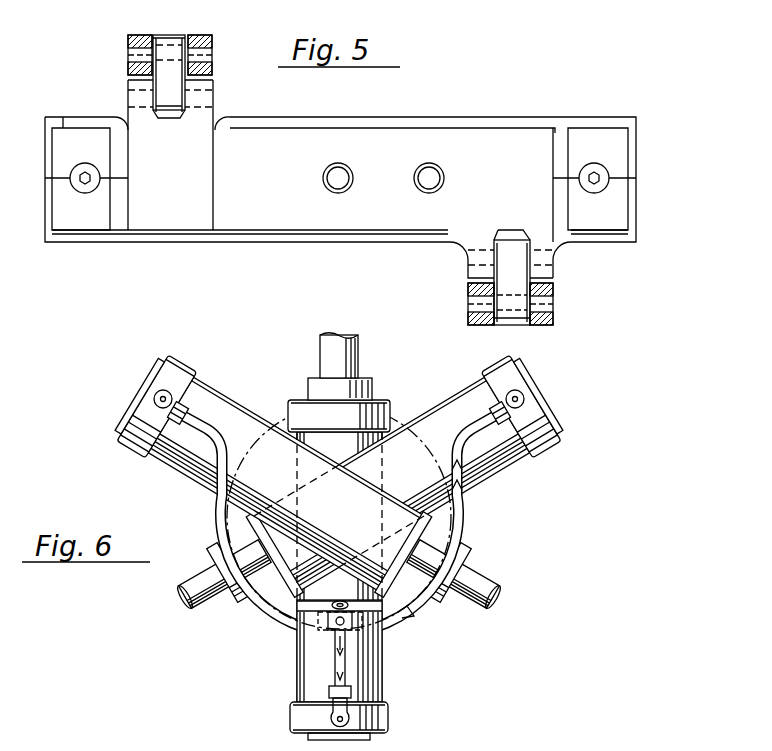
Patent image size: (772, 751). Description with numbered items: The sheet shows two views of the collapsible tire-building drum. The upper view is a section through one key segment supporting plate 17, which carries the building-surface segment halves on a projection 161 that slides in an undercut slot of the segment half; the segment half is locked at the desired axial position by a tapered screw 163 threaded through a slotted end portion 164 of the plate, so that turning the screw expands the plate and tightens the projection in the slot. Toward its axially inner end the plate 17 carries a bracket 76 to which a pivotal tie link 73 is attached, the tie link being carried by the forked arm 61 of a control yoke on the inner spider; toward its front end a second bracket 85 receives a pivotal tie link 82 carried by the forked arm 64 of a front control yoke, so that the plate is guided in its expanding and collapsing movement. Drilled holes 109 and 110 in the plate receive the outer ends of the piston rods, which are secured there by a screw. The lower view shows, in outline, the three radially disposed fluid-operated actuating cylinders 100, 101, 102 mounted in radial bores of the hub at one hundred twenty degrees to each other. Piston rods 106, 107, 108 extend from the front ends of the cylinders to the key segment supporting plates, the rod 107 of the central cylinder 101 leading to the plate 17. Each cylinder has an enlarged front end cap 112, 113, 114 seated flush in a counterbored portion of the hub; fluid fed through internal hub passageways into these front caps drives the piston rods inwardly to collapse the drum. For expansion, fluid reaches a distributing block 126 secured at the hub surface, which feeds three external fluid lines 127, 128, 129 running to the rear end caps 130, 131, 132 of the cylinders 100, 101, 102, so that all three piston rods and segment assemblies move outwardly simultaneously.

In FIG. 5, the key segment supporting plate 17 is at (265, 222).
In FIG. 5, the forked arm 61 is at (128, 45).
In FIG. 5, the forked arm 64 is at (538, 325).
In FIG. 5, the pivotal tie link 73 is at (170, 92).
In FIG. 5, the bracket 76 is at (212, 90).
In FIG. 5, the pivotal tie link 82 is at (500, 322).
In FIG. 5, the bracket 85 is at (552, 262).
In FIG. 5, the drilled hole 109 is at (337, 166).
In FIG. 5, the drilled hole 110 is at (430, 166).
In FIG. 5, the projection 161 is at (88, 112).
In FIG. 5, the tapered screw 163 is at (74, 186).
In FIG. 5, the slotted end portion 164 is at (62, 176).
In FIG. 6, the fluid-operated actuating cylinder 100 is at (505, 452).
In FIG. 6, the fluid-operated actuating cylinder 101 is at (382, 678).
In FIG. 6, the fluid-operated actuating cylinder 102 is at (220, 395).
In FIG. 6, the piston rod 106 is at (182, 592).
In FIG. 6, the piston rod 107 is at (326, 346).
In FIG. 6, the piston rod 108 is at (488, 580).
In FIG. 6, the front end cap 112 is at (262, 590).
In FIG. 6, the front end cap 113 is at (385, 405).
In FIG. 6, the front end cap 114 is at (452, 528).
In FIG. 6, the distributing block 126 is at (318, 626).
In FIG. 6, the external fluid line 127 is at (420, 602).
In FIG. 6, the external fluid line 128 is at (352, 645).
In FIG. 6, the external fluid line 129 is at (215, 506).
In FIG. 6, the rear end cap 130 is at (557, 443).
In FIG. 6, the rear end cap 131 is at (390, 715).
In FIG. 6, the rear end cap 132 is at (186, 355).